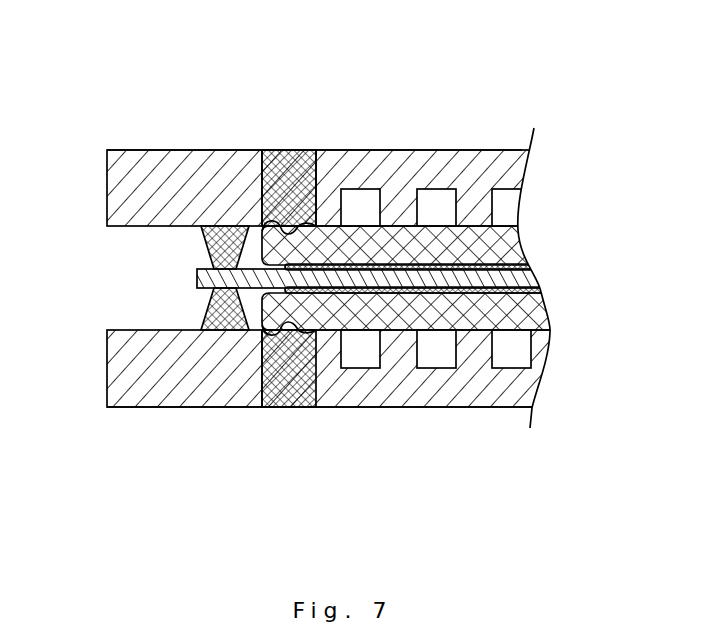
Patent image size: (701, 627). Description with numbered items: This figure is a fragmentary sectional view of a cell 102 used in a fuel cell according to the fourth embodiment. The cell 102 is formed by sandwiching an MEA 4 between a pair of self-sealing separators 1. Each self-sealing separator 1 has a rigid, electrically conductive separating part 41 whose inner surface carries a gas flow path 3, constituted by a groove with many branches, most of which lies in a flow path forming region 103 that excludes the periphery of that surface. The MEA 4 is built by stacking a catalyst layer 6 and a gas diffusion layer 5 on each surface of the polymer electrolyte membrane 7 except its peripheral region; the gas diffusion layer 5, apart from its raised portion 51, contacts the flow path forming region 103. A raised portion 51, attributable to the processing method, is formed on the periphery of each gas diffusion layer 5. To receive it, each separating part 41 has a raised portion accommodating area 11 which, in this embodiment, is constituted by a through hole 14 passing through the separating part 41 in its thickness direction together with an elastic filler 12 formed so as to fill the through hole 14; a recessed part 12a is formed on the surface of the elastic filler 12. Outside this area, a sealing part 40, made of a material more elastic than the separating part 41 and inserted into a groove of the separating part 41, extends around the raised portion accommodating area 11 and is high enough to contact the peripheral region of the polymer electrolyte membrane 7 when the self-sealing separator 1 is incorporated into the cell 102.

The self-sealing separator 1 is at (460, 144).
The gas flow path 3 is at (358, 191).
The MEA 4 is at (608, 183).
The gas diffusion layer 5 is at (527, 246).
The catalyst layer 6 is at (535, 268).
The polymer electrolyte membrane 7 is at (197, 280).
The raised portion accommodating area 11 is at (198, 72).
The elastic filler 12 is at (286, 160).
The recessed part 12a is at (318, 200).
The through hole 14 is at (260, 188).
The sealing part 40 is at (210, 247).
The separating part 41 is at (520, 172).
The raised portion 51 is at (252, 229).
The cell 102 is at (105, 111).
The flow path forming region 103 is at (407, 236).